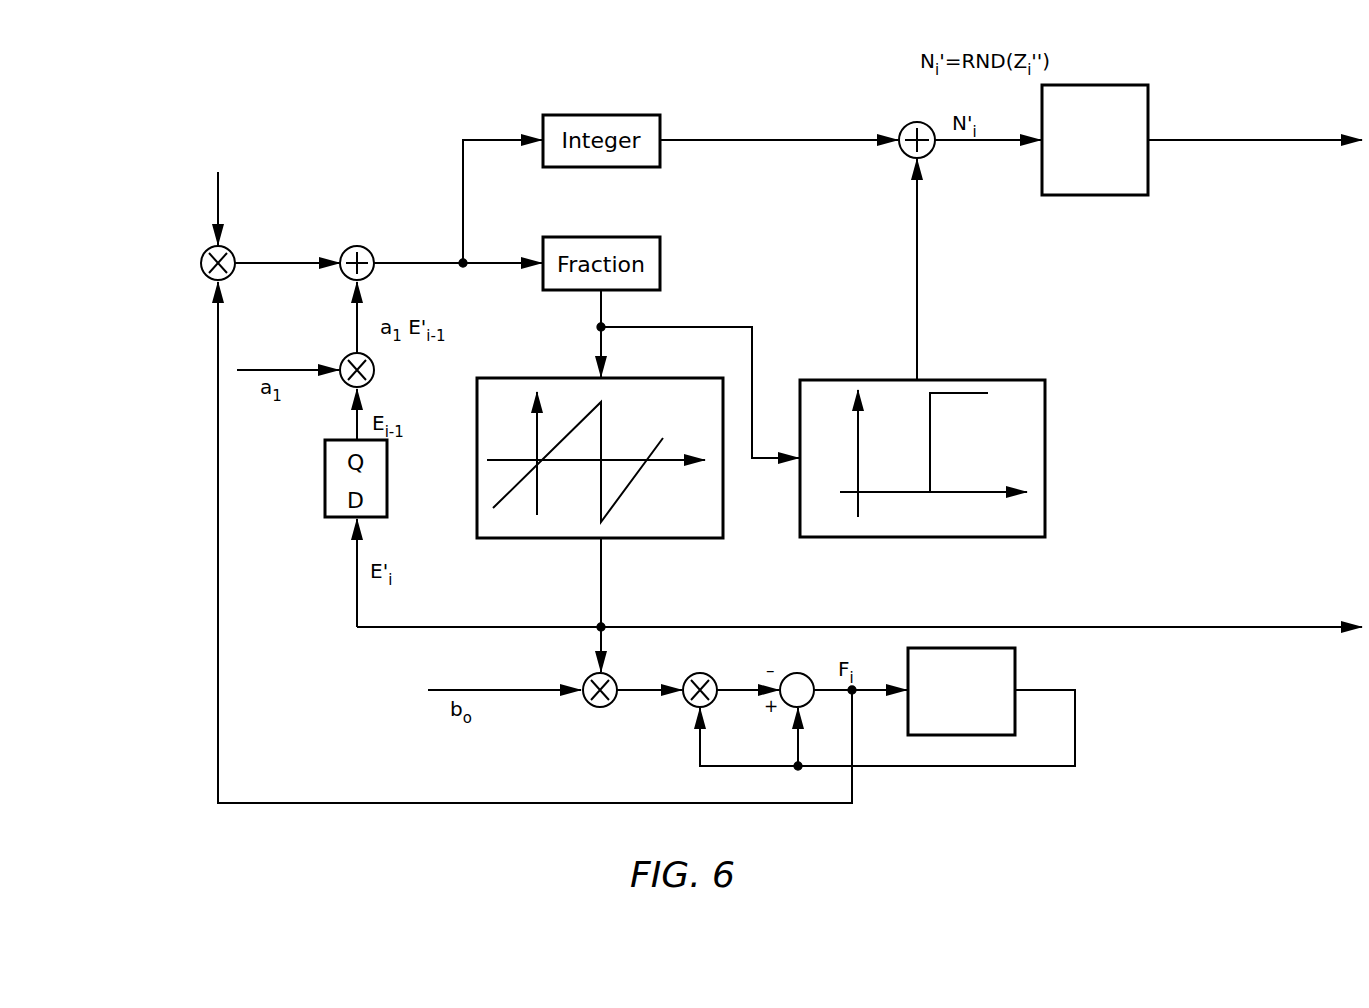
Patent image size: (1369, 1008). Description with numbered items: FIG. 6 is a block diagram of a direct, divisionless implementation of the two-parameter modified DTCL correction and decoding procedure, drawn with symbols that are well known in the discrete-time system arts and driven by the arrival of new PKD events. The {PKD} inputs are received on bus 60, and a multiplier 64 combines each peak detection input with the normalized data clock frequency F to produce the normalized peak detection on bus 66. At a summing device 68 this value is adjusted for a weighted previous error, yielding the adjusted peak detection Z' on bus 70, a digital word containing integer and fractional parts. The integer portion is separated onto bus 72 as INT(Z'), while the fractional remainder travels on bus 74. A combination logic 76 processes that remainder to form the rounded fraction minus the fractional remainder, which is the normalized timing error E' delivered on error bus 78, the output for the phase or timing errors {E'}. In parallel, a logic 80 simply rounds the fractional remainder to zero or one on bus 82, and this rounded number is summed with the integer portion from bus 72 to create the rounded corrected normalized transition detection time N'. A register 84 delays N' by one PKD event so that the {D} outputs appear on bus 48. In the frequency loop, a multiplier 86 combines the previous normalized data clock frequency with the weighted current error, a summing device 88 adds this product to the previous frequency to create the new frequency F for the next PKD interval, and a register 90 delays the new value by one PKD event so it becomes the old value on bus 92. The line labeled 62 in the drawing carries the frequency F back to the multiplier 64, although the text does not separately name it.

The output bus 48 is at (1306, 139).
The input bus 60 is at (218, 192).
The feedback line F 62 is at (218, 490).
The multiplier 64 is at (201, 266).
The bus 66 is at (258, 265).
The summing device 68 is at (368, 250).
The bus 70 is at (463, 200).
The bus 72 is at (756, 142).
The bus 74 is at (598, 319).
The combination logic 76 is at (723, 508).
The error bus 78 is at (601, 603).
The rounding logic 80 is at (1045, 420).
The bus 82 is at (917, 215).
The register 84 is at (1105, 195).
The multiplier 86 is at (712, 678).
The summing device 88 is at (805, 674).
The register 90 is at (1015, 658).
The bus 92 is at (1075, 728).